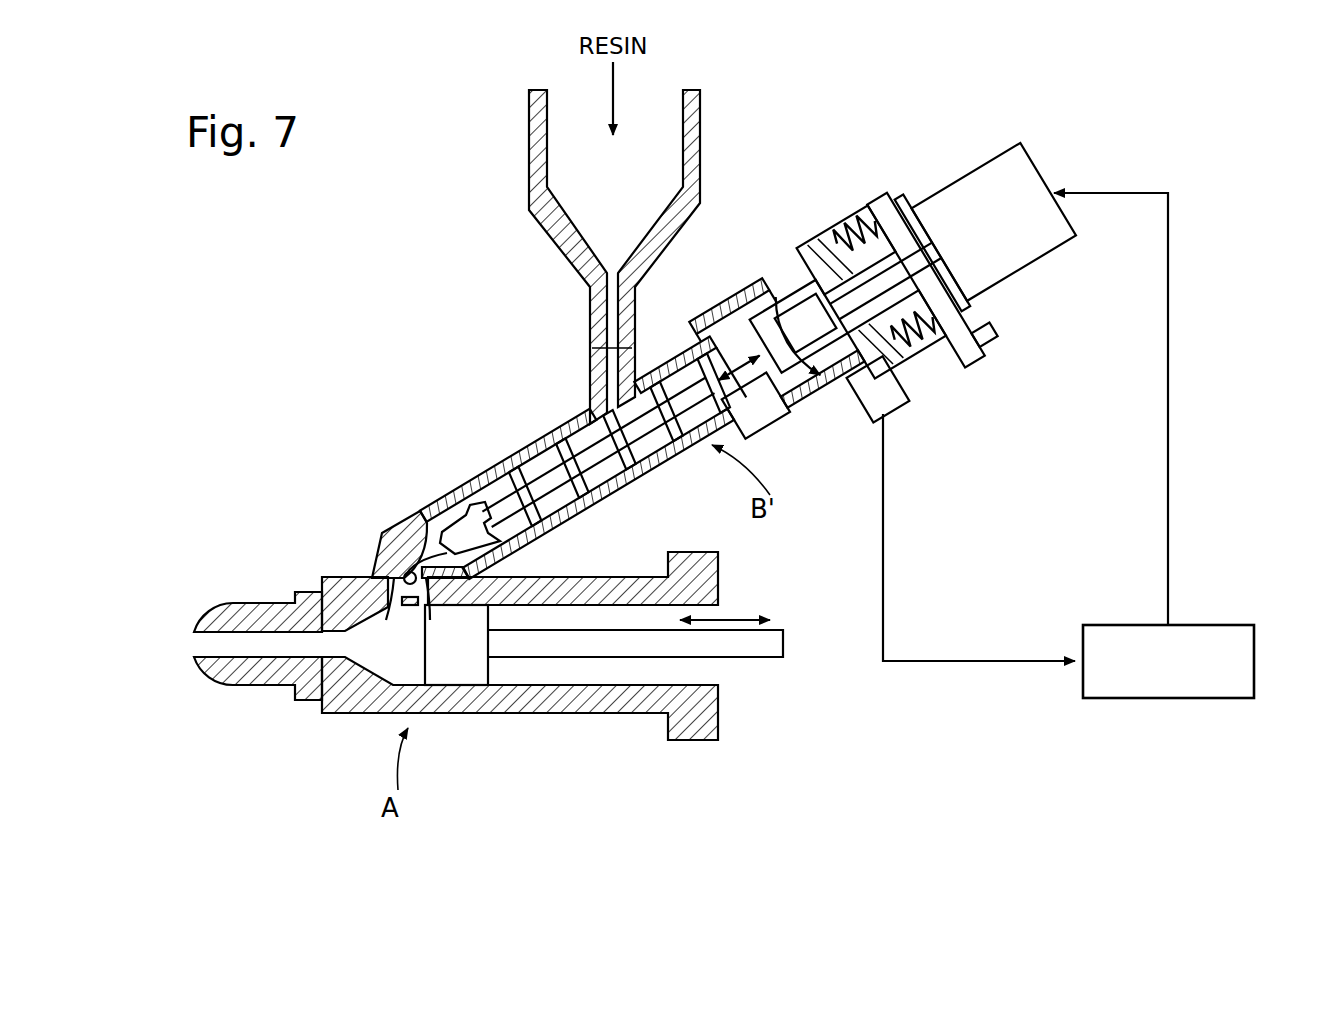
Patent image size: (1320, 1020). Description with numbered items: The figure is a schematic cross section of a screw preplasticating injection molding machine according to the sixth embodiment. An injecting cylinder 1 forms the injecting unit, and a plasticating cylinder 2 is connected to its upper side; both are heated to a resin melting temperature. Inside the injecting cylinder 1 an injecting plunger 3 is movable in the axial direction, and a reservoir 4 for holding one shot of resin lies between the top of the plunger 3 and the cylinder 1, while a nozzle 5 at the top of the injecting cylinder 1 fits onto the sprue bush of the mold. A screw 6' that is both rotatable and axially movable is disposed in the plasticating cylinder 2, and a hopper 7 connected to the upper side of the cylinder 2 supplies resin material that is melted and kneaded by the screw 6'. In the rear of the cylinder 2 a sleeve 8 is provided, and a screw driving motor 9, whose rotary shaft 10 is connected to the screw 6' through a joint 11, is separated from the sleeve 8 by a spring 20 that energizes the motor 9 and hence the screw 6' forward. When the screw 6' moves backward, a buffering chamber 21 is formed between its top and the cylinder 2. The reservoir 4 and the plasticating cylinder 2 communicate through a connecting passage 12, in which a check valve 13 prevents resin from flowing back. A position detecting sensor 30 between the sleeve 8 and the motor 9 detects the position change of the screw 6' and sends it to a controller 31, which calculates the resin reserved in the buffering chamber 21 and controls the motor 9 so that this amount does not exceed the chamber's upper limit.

The injecting cylinder 1 is at (573, 713).
The plasticating cylinder 2 is at (657, 470).
The injecting plunger 3 is at (453, 672).
The reservoir 4 is at (370, 665).
The nozzle 5 is at (224, 687).
The screw 6' is at (711, 394).
The hopper 7 is at (528, 148).
The sleeve 8 is at (810, 407).
The screw driving motor 9 is at (997, 187).
The rotary shaft 10 is at (807, 305).
The joint 11 is at (805, 310).
The connecting passage 12 is at (382, 532).
The check valve 13 is at (408, 590).
The spring 20 is at (852, 217).
The buffering chamber 21 is at (426, 522).
The position detecting sensor 30 is at (906, 404).
The controller 31 is at (1232, 625).